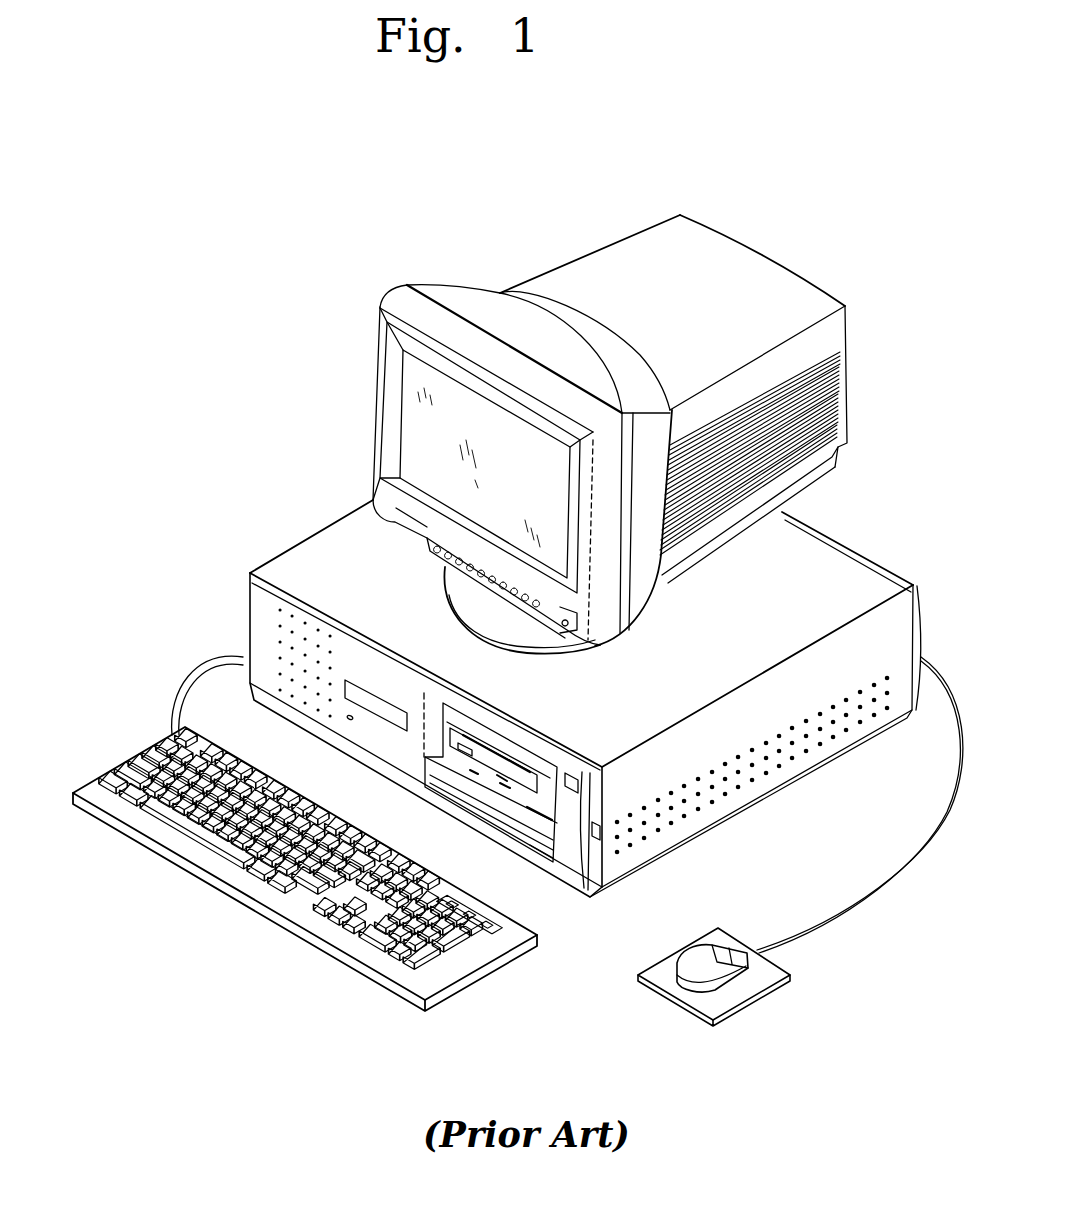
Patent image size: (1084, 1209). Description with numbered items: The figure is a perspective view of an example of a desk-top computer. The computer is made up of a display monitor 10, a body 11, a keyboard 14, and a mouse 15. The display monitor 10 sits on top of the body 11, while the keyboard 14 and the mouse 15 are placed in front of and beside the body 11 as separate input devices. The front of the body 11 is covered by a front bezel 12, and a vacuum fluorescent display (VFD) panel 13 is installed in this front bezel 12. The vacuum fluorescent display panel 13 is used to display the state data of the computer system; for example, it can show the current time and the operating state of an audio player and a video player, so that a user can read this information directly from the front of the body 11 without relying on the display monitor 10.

The display monitor 10 is at (593, 267).
The body 11 is at (570, 691).
The front bezel 12 is at (410, 693).
The vacuum fluorescent display (VFD) panel 13 is at (382, 713).
The keyboard 14 is at (438, 973).
The mouse 15 is at (690, 972).